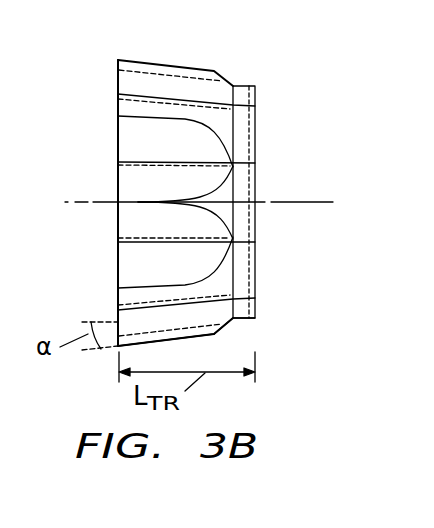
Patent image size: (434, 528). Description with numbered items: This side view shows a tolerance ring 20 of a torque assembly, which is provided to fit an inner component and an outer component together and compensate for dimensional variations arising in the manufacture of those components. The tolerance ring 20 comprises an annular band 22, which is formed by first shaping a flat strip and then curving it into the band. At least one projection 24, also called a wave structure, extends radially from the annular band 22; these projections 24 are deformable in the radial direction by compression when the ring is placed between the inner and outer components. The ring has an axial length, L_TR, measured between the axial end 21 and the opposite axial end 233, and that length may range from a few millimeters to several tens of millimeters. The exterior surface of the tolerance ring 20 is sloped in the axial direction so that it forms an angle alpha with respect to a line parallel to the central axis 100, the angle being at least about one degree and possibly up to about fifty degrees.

The tolerance ring 20 is at (247, 85).
The axial end 21 is at (140, 60).
The annular band 22 is at (241, 320).
The end flange 233 is at (255, 90).
The projection 24 is at (118, 348).
The central axis 100 is at (297, 202).